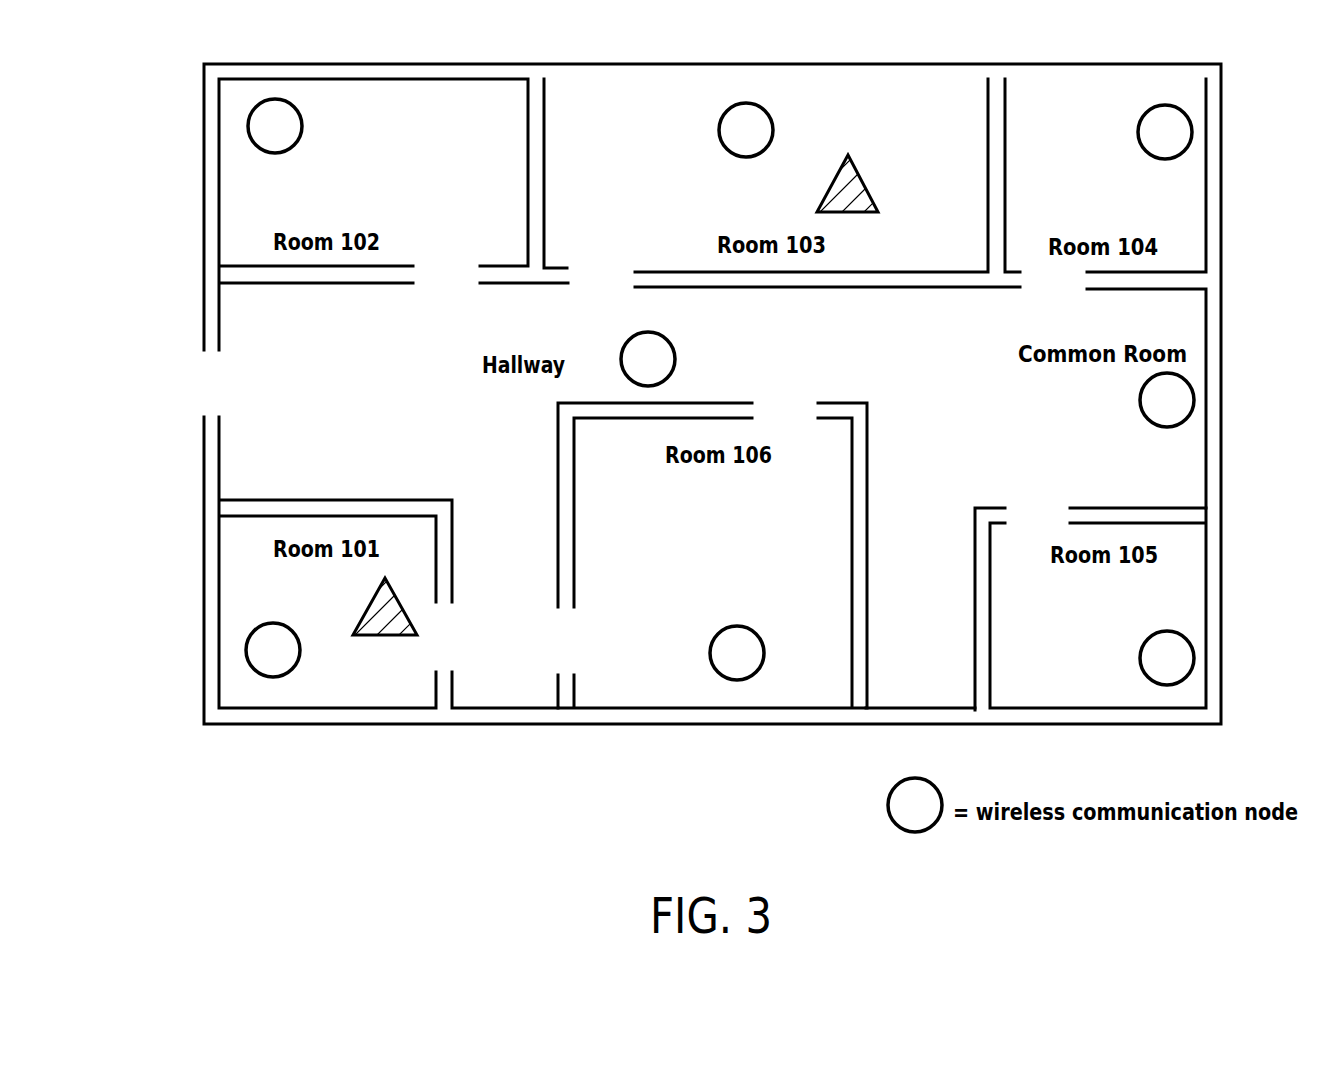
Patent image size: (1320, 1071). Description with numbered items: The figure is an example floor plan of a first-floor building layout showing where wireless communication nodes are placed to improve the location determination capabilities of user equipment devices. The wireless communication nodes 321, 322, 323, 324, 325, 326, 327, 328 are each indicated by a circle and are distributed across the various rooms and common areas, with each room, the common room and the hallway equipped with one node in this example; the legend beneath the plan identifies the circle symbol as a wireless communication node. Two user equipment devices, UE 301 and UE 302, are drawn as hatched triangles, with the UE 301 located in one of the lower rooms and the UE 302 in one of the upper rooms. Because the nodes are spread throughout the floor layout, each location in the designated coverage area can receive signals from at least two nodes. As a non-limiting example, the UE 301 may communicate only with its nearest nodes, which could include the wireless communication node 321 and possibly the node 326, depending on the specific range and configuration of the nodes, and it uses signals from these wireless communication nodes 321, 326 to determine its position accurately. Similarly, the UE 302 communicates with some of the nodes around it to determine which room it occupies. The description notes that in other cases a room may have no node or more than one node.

The UE 301 is at (417, 610).
The UE 302 is at (862, 172).
The wireless communication node 321 is at (255, 658).
The wireless communication node 322 is at (262, 126).
The wireless communication node 323 is at (733, 118).
The wireless communication node 324 is at (1157, 133).
The wireless communication node 325 is at (1157, 665).
The wireless communication node 326 is at (728, 660).
The wireless communication node 327 is at (1173, 400).
The wireless communication node 328 is at (655, 362).